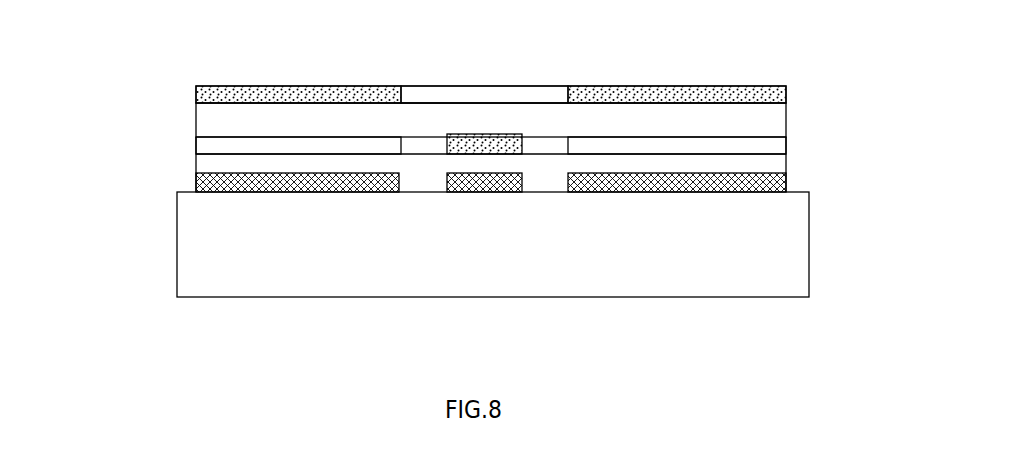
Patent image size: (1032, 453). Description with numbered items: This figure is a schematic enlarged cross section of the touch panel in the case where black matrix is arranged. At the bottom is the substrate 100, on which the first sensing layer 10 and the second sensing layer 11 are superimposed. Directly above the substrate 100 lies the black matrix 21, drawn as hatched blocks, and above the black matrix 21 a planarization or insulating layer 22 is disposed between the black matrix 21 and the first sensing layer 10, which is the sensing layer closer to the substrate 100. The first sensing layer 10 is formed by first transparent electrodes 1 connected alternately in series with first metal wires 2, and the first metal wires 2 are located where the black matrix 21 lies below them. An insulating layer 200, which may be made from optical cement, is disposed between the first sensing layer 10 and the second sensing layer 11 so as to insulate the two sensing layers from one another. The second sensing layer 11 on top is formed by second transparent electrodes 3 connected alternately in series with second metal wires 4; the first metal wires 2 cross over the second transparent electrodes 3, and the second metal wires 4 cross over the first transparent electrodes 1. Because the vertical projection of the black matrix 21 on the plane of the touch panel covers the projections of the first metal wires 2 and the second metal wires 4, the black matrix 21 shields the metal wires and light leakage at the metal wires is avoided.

The first transparent electrode 1 is at (553, 178).
The first metal wire 2 is at (490, 94).
The second transparent electrode 3 is at (507, 58).
The second metal wire 4 is at (491, 54).
The first sensing layer 10 is at (188, 148).
The second sensing layer 11 is at (188, 95).
The black matrix 21 is at (313, 177).
The insulating layer 22 is at (414, 177).
The substrate 100 is at (544, 244).
The insulating layer 200 is at (553, 130).